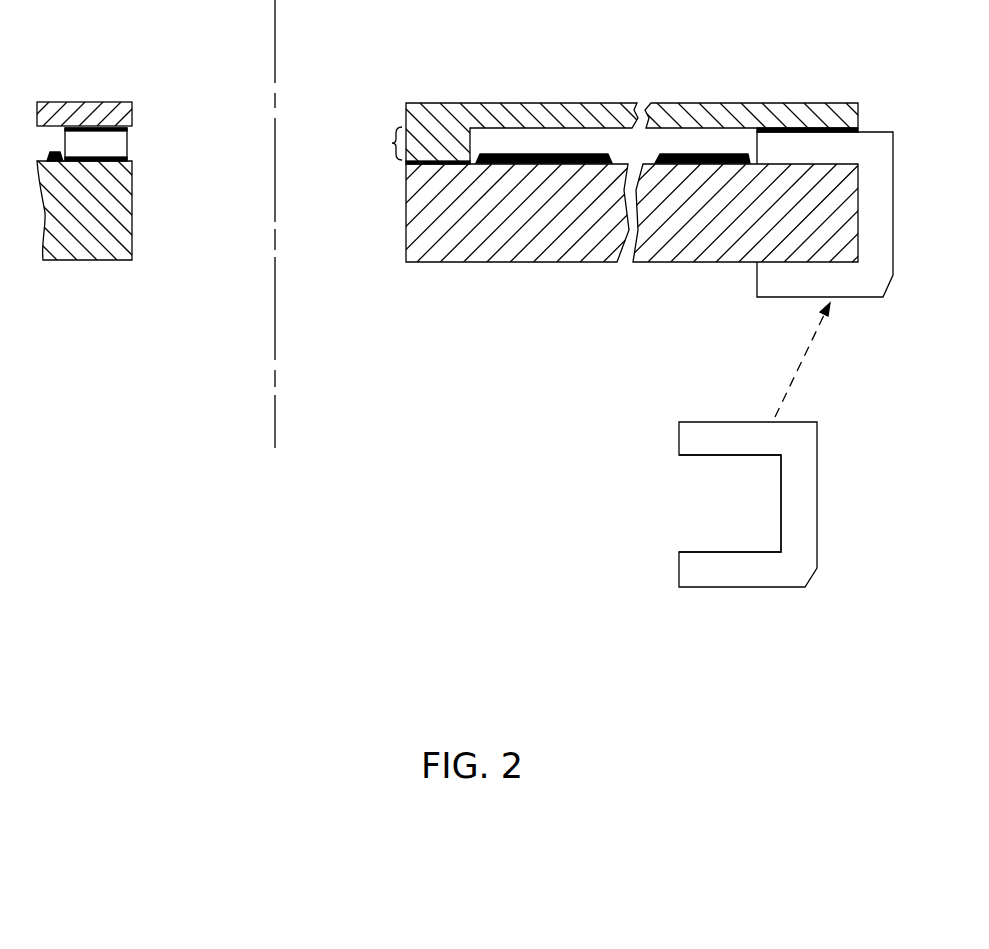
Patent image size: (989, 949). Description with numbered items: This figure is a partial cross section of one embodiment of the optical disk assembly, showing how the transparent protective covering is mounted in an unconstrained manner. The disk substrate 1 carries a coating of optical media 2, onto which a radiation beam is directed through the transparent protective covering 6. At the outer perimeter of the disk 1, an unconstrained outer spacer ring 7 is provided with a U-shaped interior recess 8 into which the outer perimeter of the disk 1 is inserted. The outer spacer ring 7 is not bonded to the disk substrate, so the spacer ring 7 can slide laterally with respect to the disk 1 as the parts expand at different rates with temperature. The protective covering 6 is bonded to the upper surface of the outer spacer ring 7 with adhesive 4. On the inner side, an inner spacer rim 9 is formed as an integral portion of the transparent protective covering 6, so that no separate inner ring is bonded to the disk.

The disk substrate 1 is at (452, 247).
The optical media 2 is at (515, 154).
The adhesive 4 is at (406, 163).
The transparent protective covering 6 is at (592, 112).
The outer spacer ring 7 is at (870, 270).
The U-shaped interior recess 8 is at (728, 503).
The inner spacer rim 9 is at (390, 143).